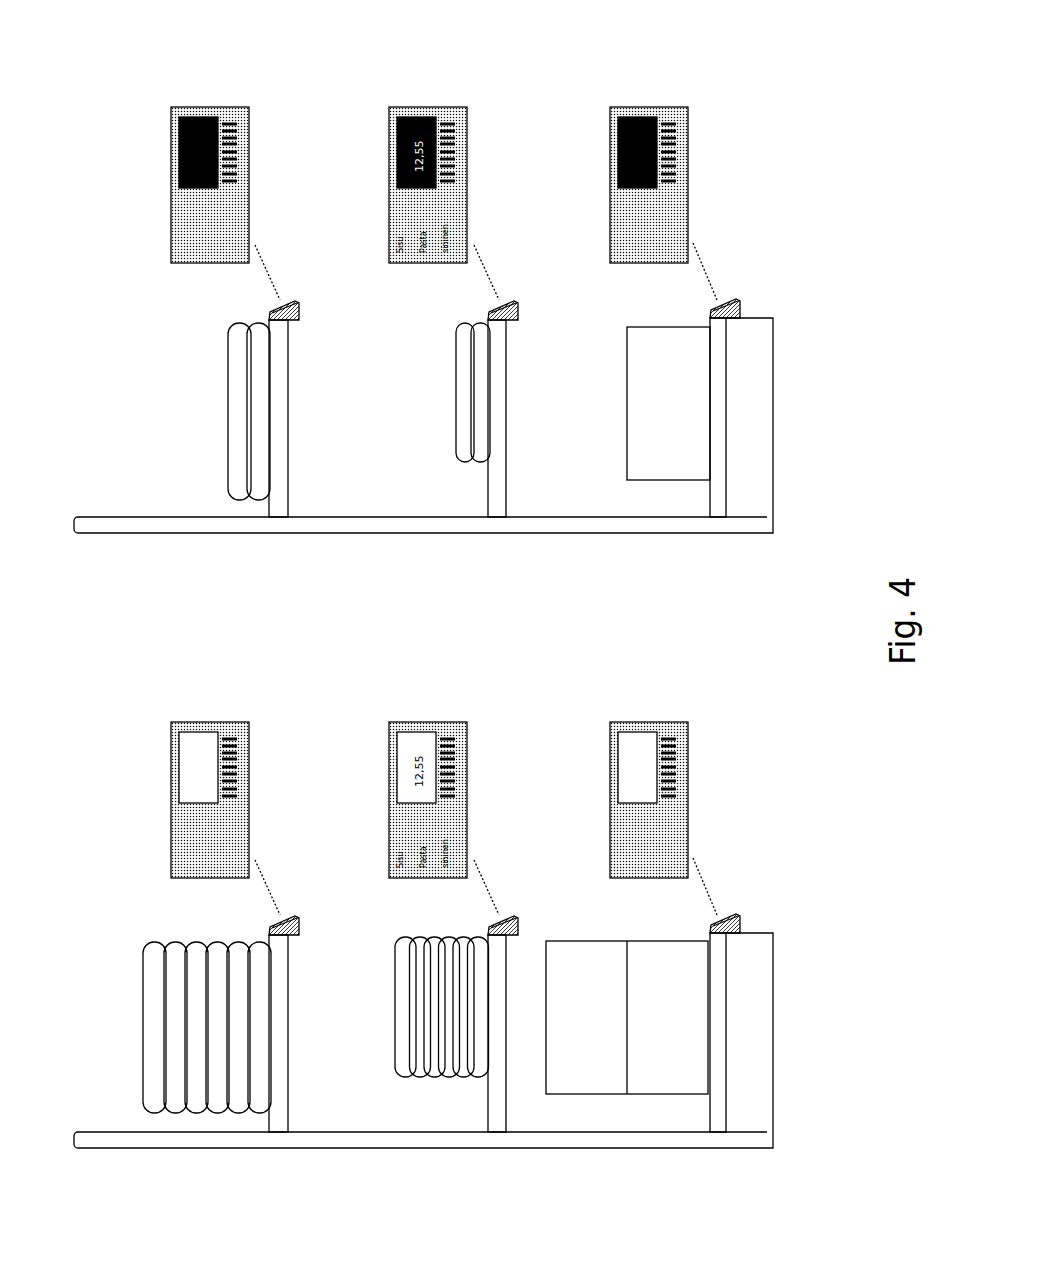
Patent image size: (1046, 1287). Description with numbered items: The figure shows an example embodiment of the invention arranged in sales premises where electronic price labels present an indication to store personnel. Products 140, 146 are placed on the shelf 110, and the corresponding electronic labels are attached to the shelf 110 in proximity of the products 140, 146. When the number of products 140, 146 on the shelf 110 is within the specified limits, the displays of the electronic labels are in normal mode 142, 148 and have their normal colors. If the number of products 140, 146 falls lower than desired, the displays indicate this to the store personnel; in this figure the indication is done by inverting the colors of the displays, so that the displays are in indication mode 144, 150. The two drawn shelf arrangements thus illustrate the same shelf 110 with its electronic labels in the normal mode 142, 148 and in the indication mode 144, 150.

The shelf 110 is at (85, 523).
The products 140 is at (243, 432).
The normal mode 142 is at (217, 755).
The indication mode 144 is at (195, 115).
The products 146 is at (678, 409).
The normal mode 148 is at (649, 756).
The indication mode 150 is at (642, 143).